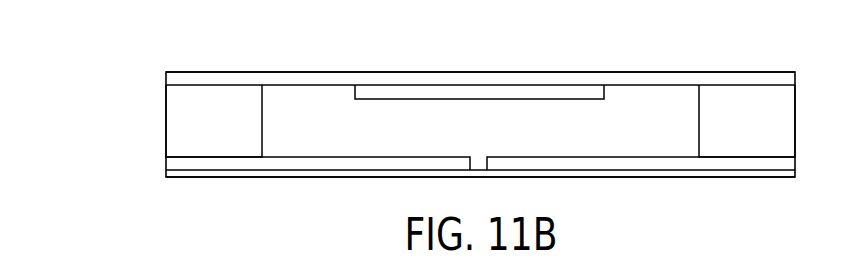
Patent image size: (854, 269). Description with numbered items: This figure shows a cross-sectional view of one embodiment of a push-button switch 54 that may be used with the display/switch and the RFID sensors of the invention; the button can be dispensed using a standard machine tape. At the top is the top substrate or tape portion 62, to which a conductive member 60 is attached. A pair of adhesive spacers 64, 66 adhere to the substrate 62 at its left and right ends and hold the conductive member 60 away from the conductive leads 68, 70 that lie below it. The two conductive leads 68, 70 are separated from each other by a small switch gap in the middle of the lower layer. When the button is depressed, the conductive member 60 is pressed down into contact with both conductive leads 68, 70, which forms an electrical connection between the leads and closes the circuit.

The push-button switch 54 is at (417, 111).
The conductive member 60 is at (452, 93).
The top substrate or tape portion 62 is at (657, 77).
The adhesive spacer 64 is at (197, 134).
The adhesive spacer 66 is at (732, 135).
The conductive lead 68 is at (352, 162).
The conductive lead 70 is at (600, 157).